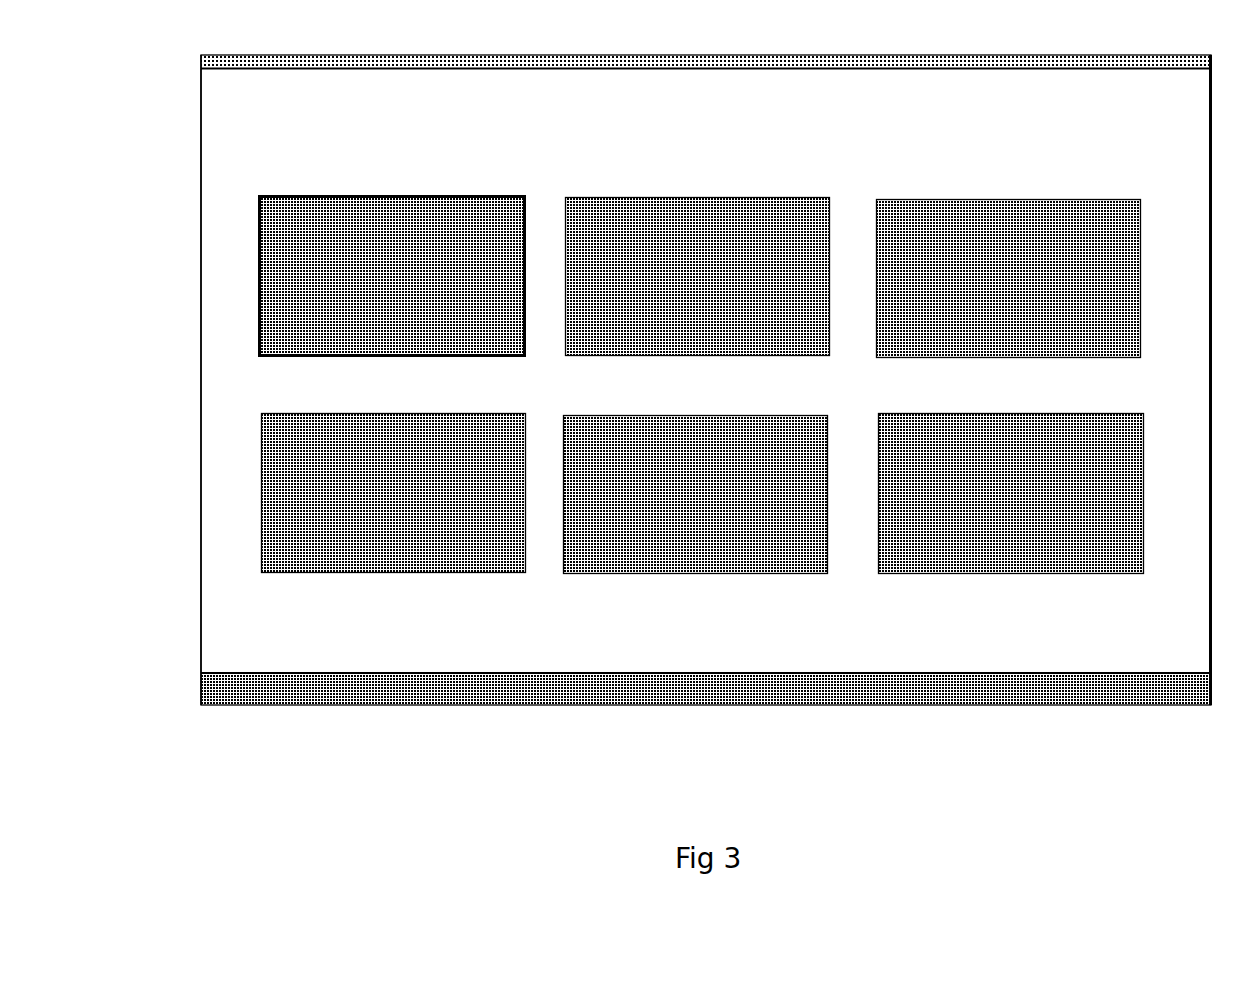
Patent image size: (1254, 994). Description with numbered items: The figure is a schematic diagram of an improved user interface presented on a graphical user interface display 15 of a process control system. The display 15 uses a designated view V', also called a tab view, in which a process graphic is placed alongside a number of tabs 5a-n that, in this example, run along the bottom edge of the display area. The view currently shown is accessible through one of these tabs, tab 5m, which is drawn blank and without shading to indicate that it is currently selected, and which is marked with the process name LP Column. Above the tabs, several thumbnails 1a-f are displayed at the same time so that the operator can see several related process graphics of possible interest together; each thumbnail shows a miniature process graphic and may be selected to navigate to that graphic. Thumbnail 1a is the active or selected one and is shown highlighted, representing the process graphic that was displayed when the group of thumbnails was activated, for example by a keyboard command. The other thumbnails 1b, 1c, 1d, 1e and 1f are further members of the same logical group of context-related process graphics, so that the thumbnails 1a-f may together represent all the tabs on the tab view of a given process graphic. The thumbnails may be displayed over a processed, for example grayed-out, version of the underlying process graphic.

The graphical user interface display 15 is at (689, 373).
The thumbnails 1a-f is at (385, 163).
The thumbnail 1a is at (278, 246).
The thumbnail 1b is at (680, 205).
The thumbnail 1c is at (1113, 222).
The thumbnail 1d is at (1105, 480).
The thumbnail 1e is at (696, 495).
The thumbnail 1f is at (268, 480).
The tabs 5a-n is at (677, 707).
The designated view V' is at (790, 710).
The tab 5m is at (985, 709).